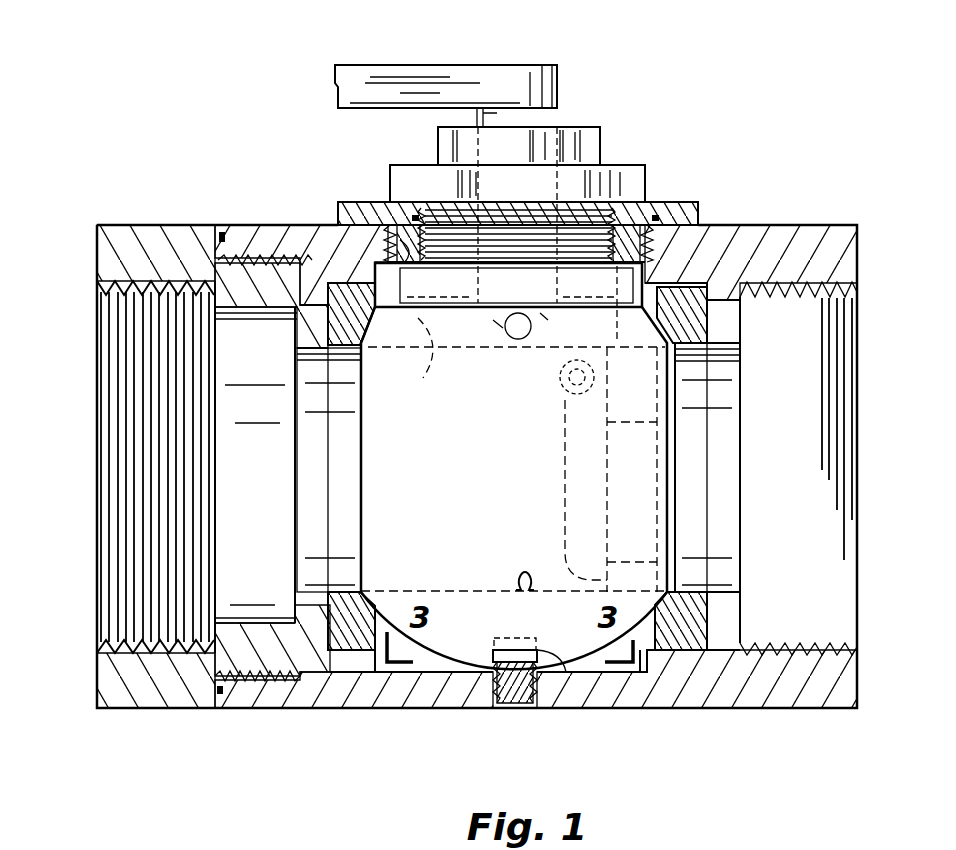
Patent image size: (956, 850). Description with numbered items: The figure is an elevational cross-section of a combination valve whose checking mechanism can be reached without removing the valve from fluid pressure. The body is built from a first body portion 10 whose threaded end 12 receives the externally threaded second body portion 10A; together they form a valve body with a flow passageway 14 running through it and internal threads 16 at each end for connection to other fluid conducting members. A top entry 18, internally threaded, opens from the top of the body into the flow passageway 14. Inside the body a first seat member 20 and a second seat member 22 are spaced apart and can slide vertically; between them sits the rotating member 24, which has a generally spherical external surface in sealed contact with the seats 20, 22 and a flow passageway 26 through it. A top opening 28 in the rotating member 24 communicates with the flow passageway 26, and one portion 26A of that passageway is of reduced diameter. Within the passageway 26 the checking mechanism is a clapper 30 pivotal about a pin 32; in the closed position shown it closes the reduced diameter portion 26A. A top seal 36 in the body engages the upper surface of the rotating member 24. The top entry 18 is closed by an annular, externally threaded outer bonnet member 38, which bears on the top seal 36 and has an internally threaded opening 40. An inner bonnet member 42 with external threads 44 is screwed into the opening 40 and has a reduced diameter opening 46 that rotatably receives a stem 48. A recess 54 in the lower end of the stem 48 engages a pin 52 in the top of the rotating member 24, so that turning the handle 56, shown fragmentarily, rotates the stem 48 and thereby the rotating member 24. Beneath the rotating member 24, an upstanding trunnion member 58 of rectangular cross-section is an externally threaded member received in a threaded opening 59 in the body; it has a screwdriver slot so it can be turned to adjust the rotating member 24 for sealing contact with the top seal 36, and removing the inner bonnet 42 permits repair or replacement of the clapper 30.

The first body portion 10 is at (318, 695).
The second body portion 10A is at (138, 697).
The threaded end 12 is at (212, 688).
The flow passageway 14 is at (302, 592).
The internal threads 16 is at (125, 648).
The top entry 18 is at (410, 250).
The first seat member 20 is at (345, 322).
The second seat member 22 is at (690, 325).
The rotating member 24 is at (476, 652).
The flow passageway 26 is at (515, 611).
The reduced diameter portion 26A is at (630, 560).
The top opening 28 is at (410, 363).
The clapper 30 is at (571, 506).
The pin 32 is at (572, 385).
The top seal 36 is at (503, 282).
The outer bonnet member 38 is at (680, 218).
The internally threaded opening 40 is at (521, 276).
The inner bonnet member 42 is at (590, 180).
The external threads 44 is at (410, 263).
The reduced diameter opening 46 is at (518, 258).
The stem 48 is at (477, 115).
The pin 52 is at (503, 334).
The recess 54 is at (537, 325).
The handle 56 is at (386, 80).
The trunnion member 58 is at (540, 662).
The threaded opening 59 is at (515, 700).